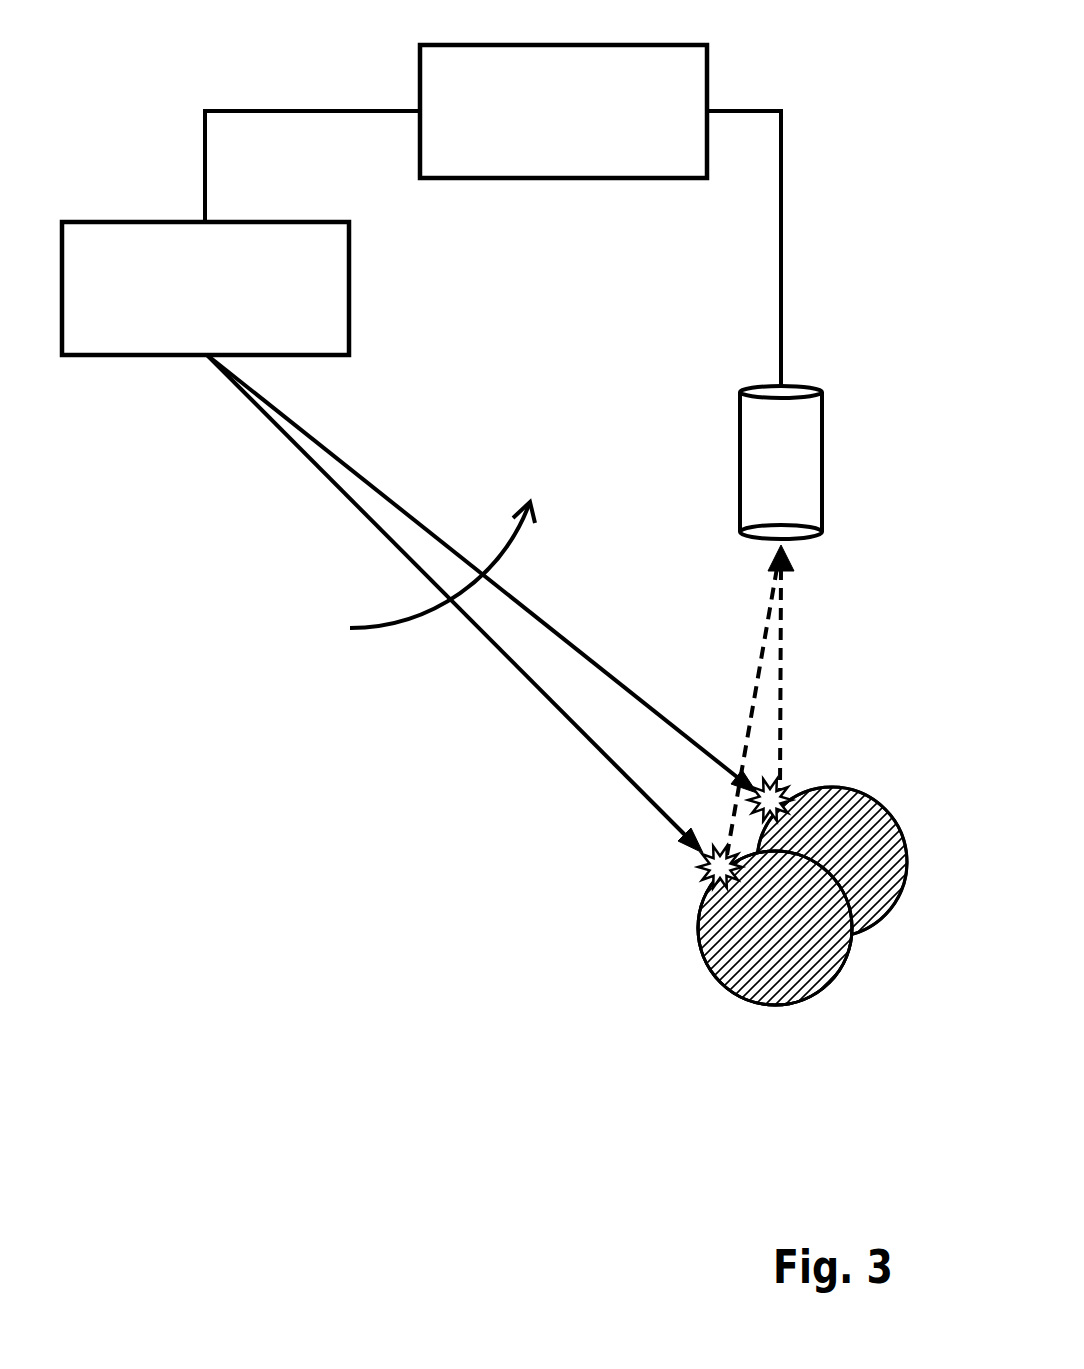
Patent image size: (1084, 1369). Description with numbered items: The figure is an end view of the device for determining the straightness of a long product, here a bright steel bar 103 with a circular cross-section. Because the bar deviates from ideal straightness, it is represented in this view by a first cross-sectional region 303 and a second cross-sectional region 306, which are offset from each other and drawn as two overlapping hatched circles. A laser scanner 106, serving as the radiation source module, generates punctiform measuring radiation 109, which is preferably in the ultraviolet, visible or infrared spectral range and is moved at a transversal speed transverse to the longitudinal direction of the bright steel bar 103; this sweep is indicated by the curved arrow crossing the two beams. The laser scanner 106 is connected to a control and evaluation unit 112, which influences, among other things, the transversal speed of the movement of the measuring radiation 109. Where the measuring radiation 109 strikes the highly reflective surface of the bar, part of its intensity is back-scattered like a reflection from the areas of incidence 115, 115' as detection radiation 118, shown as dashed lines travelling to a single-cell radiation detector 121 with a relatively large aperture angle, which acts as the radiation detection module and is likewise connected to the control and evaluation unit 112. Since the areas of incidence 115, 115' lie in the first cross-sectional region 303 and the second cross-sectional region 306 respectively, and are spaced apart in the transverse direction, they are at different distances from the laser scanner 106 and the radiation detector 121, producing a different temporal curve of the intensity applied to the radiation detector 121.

The bright steel bar 103 is at (863, 944).
The laser scanner 106 is at (170, 306).
The measuring radiation 109 is at (565, 635).
The control and evaluation unit 112 is at (538, 126).
The area of incidence 115 is at (665, 906).
The area of incidence 115' is at (844, 720).
The detection radiation 118 is at (781, 623).
The radiation detector 121 is at (780, 460).
The first cross-sectional region 303 is at (745, 967).
The second cross-sectional region 306 is at (882, 832).